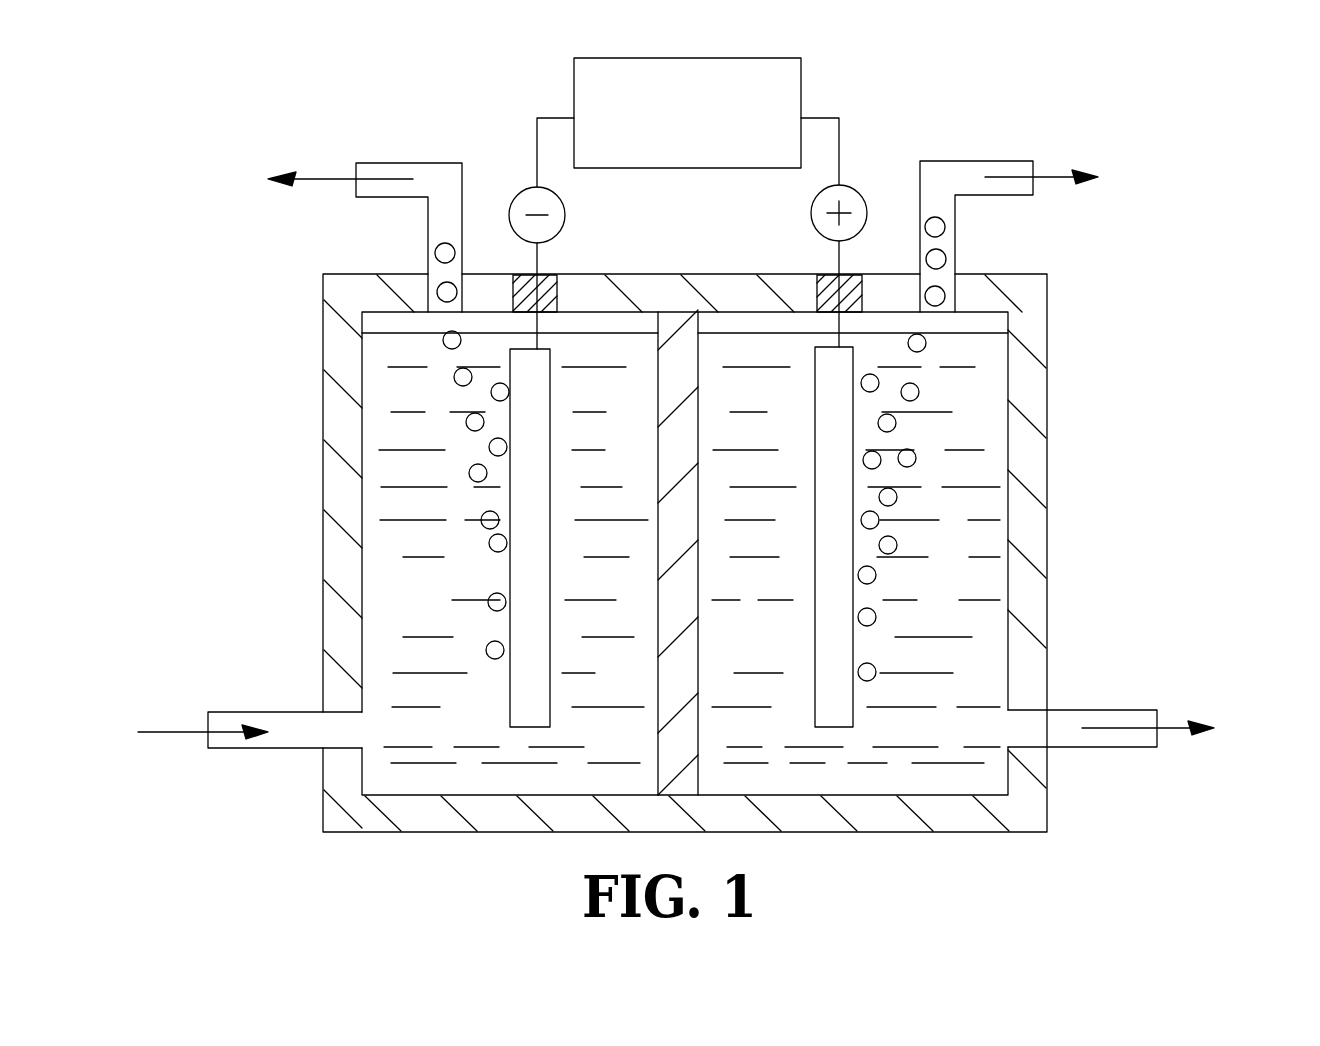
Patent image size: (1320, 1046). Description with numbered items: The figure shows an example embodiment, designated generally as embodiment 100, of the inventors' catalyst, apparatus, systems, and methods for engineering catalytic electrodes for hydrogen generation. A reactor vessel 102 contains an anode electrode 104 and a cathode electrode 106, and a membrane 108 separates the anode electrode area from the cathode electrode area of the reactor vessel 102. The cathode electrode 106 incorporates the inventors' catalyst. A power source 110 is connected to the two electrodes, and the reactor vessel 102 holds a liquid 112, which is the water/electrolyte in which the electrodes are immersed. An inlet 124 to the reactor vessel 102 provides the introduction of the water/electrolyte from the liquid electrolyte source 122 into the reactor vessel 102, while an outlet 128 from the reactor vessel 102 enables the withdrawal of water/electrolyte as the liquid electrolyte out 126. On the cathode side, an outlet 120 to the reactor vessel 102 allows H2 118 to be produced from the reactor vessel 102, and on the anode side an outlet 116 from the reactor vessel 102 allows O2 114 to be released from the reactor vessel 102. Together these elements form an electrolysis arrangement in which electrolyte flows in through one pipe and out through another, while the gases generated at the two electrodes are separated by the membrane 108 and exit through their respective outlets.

The catalyst, apparatus, systems, and methods embodiment 100 is at (958, 46).
The reactor vessel 102 is at (1047, 381).
The anode electrode 104 is at (813, 490).
The cathode electrode 106 is at (548, 495).
The membrane 108 is at (700, 643).
The power source 110 is at (723, 58).
The liquid 112 is at (440, 609).
The O2 114 is at (1053, 178).
The outlet 116 is at (930, 158).
The H2 118 is at (307, 183).
The outlet 120 is at (455, 162).
The liquid electrolyte source 122 is at (160, 730).
The inlet 124 is at (275, 752).
The liquid electrolyte out 126 is at (1163, 726).
The outlet 128 is at (1092, 749).